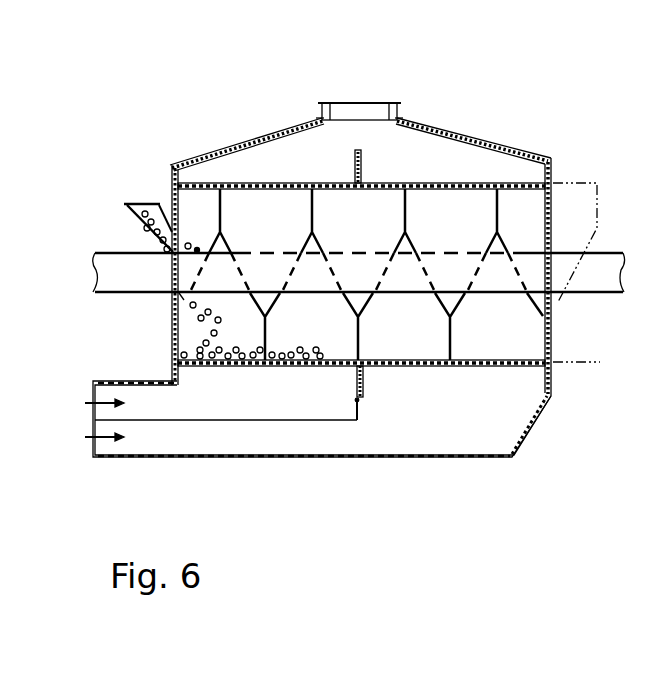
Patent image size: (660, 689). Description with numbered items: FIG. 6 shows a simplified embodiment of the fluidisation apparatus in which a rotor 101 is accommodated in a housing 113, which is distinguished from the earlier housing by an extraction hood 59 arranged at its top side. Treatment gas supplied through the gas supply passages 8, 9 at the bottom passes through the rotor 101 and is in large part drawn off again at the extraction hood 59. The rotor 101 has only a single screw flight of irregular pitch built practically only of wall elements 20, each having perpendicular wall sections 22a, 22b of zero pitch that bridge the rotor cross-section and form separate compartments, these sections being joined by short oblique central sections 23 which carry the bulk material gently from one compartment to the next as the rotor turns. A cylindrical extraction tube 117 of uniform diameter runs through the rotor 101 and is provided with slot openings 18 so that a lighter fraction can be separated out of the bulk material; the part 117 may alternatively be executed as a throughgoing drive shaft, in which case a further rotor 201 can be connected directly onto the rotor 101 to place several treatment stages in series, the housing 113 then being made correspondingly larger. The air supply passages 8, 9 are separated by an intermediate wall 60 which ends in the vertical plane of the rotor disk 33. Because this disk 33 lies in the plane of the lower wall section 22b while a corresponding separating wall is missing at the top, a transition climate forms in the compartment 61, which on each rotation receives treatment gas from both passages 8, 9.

The gas supply passage 8 is at (198, 439).
The gas supply passage 9 is at (228, 406).
The slot openings 18 is at (272, 260).
The wall element 20 is at (219, 224).
The wall section 22a is at (173, 165).
The wall section 22b is at (268, 338).
The oblique central section 23 is at (230, 241).
The rotor disk 33 is at (356, 160).
The extraction hood 59 is at (408, 118).
The intermediate wall 60 is at (333, 421).
The compartment 61 is at (384, 210).
The rotor 101 is at (290, 182).
The housing 113 is at (447, 130).
The extraction tube 117 is at (591, 296).
The further rotor 201 is at (584, 179).